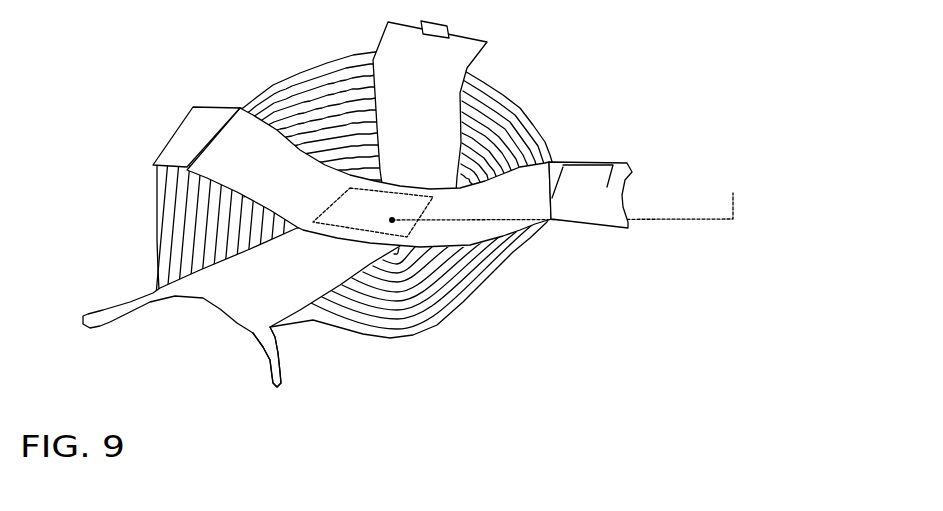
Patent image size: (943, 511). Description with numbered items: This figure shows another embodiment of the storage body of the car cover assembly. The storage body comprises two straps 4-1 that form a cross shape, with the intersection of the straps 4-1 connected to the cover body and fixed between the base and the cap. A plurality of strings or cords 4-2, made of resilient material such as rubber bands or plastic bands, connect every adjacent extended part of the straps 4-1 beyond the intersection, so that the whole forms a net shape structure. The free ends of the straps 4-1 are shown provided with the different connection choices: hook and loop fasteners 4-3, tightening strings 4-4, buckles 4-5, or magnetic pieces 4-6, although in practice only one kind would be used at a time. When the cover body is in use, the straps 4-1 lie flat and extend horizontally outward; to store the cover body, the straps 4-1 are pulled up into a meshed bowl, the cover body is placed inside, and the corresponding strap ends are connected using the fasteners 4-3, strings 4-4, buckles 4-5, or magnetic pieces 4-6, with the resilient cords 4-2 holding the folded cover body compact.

The straps 4-1 is at (415, 72).
The strings or cords 4-2 is at (313, 90).
The hook and loop fasteners 4-3 is at (176, 138).
The tightening strings 4-4 is at (276, 374).
The buckles 4-5 is at (449, 29).
The magnetic pieces 4-6 is at (590, 193).